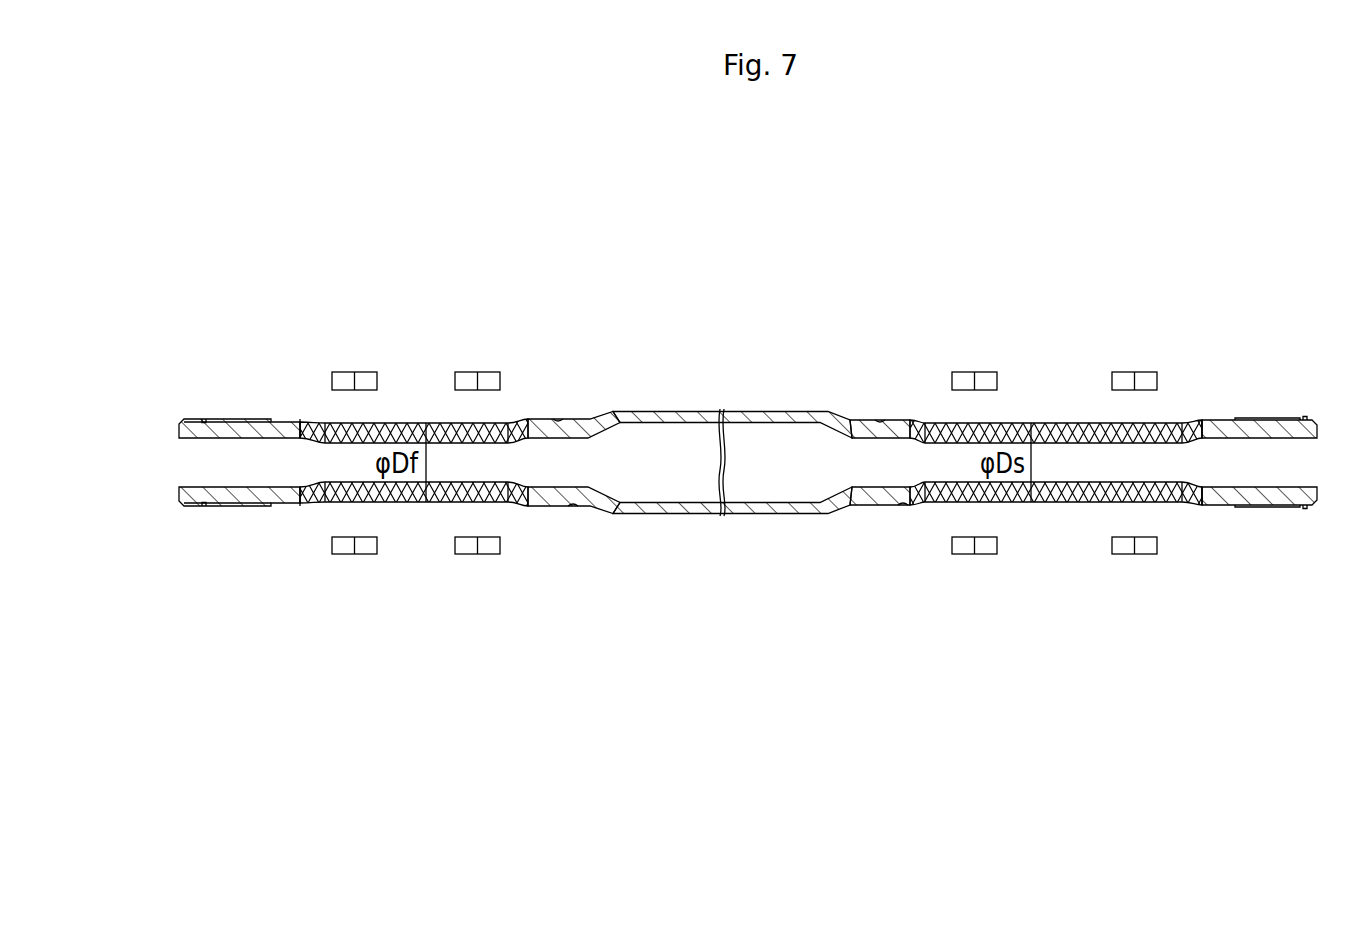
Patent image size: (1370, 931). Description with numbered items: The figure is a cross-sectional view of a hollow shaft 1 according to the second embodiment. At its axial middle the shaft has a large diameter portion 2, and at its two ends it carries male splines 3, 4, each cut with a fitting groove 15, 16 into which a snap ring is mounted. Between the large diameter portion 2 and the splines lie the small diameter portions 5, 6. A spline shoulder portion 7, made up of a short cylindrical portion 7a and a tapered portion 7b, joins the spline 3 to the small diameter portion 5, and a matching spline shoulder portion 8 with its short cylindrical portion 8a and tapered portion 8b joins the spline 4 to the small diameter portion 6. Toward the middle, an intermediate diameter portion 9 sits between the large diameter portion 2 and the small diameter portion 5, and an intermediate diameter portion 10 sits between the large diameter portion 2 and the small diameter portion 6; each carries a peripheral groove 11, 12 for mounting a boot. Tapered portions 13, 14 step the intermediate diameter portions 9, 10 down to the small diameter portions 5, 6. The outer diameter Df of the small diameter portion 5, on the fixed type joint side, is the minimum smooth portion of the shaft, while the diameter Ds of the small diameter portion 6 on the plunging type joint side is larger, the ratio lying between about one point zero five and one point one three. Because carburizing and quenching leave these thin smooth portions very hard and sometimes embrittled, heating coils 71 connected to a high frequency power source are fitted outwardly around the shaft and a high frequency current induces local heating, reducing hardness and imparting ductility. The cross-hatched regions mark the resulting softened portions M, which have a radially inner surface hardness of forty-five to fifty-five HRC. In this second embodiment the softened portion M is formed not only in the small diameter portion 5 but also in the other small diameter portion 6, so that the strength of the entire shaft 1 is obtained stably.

The hollow shaft 1 is at (795, 342).
The large diameter portion 2 is at (695, 401).
The spline 3 is at (228, 419).
The spline 4 is at (1272, 418).
The small diameter portion 5 is at (416, 503).
The small diameter portion 6 is at (1070, 503).
The spline shoulder portion 7 is at (292, 506).
The short cylindrical portion 7a is at (293, 423).
The tapered portion 7b is at (316, 502).
The spline shoulder portion 8 is at (1208, 506).
The short cylindrical portion 8a is at (1210, 424).
The tapered portion 8b is at (1192, 502).
The intermediate diameter portion 9 is at (573, 506).
The intermediate diameter portion 10 is at (905, 506).
The peripheral groove 11 is at (558, 419).
The peripheral groove 12 is at (880, 420).
The tapered portion 13 is at (512, 504).
The tapered portion 14 is at (920, 503).
The fitting groove 15 is at (204, 507).
The fitting groove 16 is at (1305, 508).
The heating coil 71 is at (486, 361).
The softened portion M is at (410, 423).